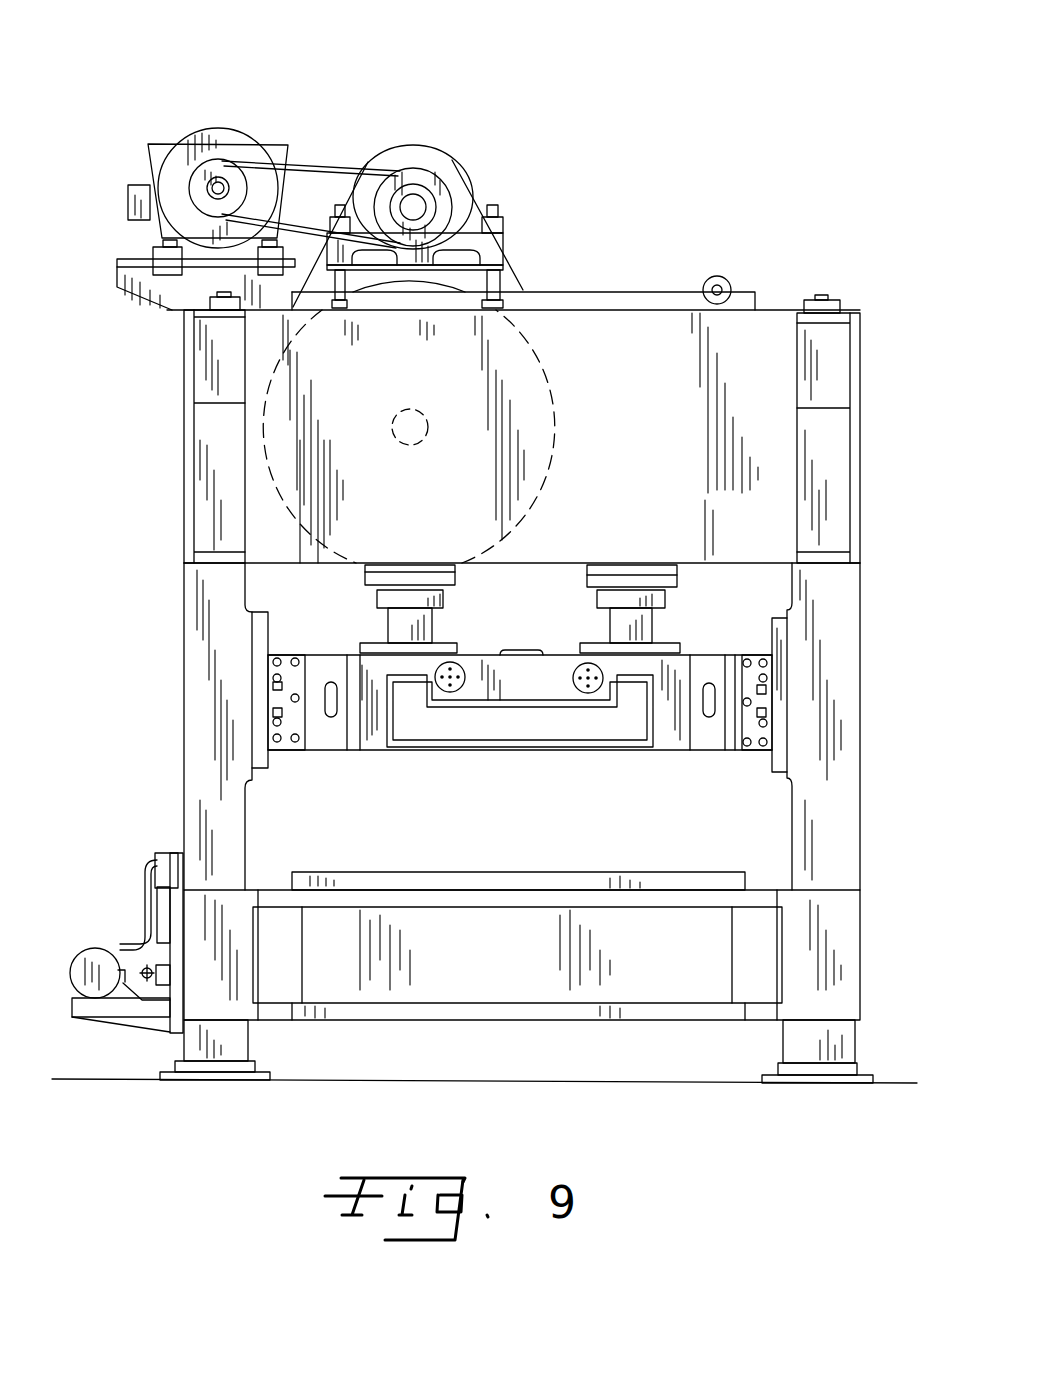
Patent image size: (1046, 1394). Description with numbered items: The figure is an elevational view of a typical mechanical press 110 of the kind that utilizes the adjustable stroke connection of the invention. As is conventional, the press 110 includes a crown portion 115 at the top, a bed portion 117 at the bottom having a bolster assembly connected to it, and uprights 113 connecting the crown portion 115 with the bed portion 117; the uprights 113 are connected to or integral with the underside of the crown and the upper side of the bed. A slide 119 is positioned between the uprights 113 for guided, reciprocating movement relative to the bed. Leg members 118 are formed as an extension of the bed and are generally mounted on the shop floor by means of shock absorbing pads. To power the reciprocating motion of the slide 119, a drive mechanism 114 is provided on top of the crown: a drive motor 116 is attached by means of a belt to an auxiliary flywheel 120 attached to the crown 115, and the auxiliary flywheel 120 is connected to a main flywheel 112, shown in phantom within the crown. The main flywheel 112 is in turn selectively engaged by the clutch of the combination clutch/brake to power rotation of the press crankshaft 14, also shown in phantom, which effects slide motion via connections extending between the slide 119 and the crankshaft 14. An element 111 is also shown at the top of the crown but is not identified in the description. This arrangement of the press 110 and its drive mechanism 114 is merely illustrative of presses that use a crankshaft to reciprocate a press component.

The mechanical press 110 is at (697, 112).
The roller 111 is at (729, 280).
The main flywheel 112 is at (560, 434).
The uprights 113 is at (197, 665).
The drive mechanism 114 is at (495, 163).
The crown portion 115 is at (758, 388).
The drive motor 116 is at (215, 128).
The bed portion 117 is at (208, 940).
The leg members 118 is at (195, 1040).
The slide 119 is at (326, 658).
The auxiliary flywheel 120 is at (403, 130).
The press crankshaft 14 is at (410, 408).